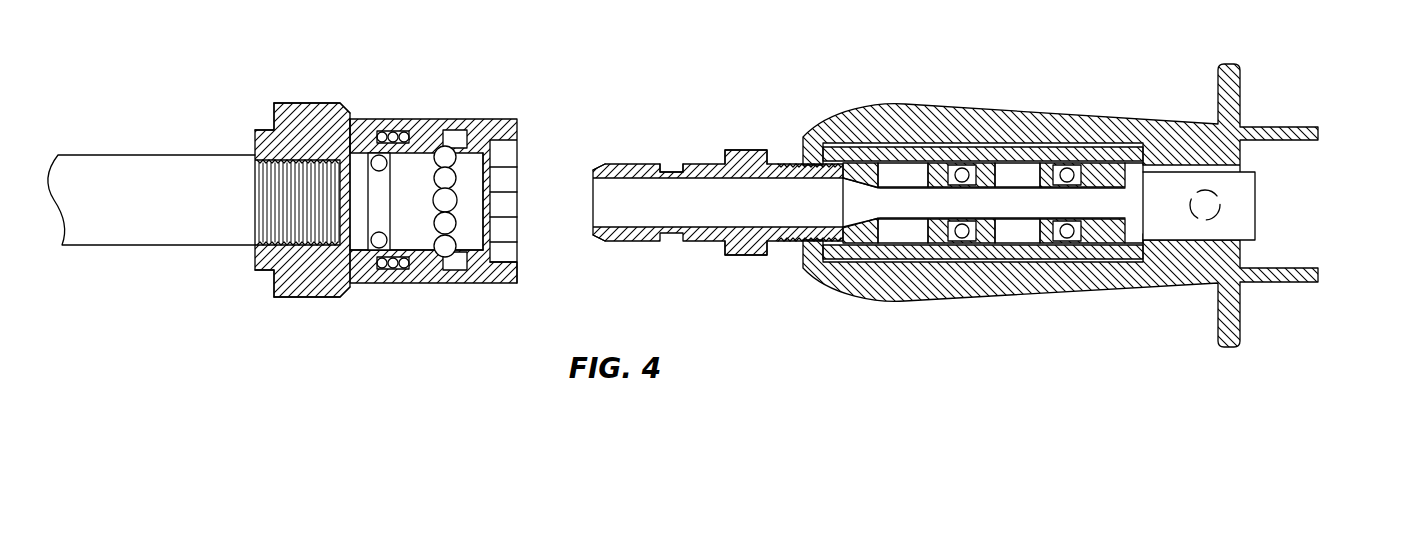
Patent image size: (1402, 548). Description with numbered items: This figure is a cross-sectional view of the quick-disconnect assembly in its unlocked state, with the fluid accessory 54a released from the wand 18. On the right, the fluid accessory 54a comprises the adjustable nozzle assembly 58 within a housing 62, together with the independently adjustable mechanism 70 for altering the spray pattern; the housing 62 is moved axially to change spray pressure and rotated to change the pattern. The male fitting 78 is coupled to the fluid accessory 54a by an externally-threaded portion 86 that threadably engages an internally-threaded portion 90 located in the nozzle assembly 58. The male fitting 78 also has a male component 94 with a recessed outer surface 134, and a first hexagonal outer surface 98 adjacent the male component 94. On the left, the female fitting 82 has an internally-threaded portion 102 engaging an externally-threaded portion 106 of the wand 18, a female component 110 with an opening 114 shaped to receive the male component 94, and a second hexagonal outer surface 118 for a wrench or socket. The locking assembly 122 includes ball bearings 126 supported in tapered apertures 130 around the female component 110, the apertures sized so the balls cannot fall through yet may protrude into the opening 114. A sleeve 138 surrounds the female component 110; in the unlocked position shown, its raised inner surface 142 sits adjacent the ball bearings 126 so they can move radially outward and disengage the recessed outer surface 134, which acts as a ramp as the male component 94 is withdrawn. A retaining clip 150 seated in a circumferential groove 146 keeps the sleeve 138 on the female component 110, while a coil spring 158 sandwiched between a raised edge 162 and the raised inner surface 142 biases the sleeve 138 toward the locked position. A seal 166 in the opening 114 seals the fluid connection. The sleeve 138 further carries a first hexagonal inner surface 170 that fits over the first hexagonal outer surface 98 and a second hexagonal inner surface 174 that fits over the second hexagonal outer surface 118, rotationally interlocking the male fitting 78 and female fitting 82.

The wand 18 is at (93, 166).
The fluid accessory 54a is at (1060, 205).
The adjustable nozzle assembly 58 is at (1105, 240).
The housing 62 is at (1015, 300).
The independently adjustable mechanism 70 is at (1258, 205).
The male fitting 78 is at (769, 284).
The female fitting 82 is at (344, 319).
The externally-threaded portion 86 is at (788, 163).
The internally-threaded portion 90 is at (835, 183).
The male component 94 is at (642, 240).
The first hexagonal outer surface 98 is at (742, 257).
The internally-threaded portion 102 is at (258, 237).
The externally-threaded portion 106 is at (318, 262).
The female component 110 is at (403, 255).
The opening 114 is at (385, 215).
The second hexagonal outer surface 118 is at (305, 103).
The locking assembly 122 is at (472, 185).
The ball bearings 126 is at (462, 265).
The tapered apertures 130 is at (446, 140).
The recessed outer surface 134 is at (668, 165).
The sleeve 138 is at (273, 285).
The raised inner surface 142 is at (425, 255).
The circumferential groove 146 is at (468, 282).
The retaining clip 150 is at (469, 142).
The coil spring 158 is at (404, 130).
The raised edge 162 is at (357, 119).
The seal 166 is at (381, 187).
The first hexagonal inner surface 170 is at (505, 247).
The second hexagonal inner surface 174 is at (262, 140).